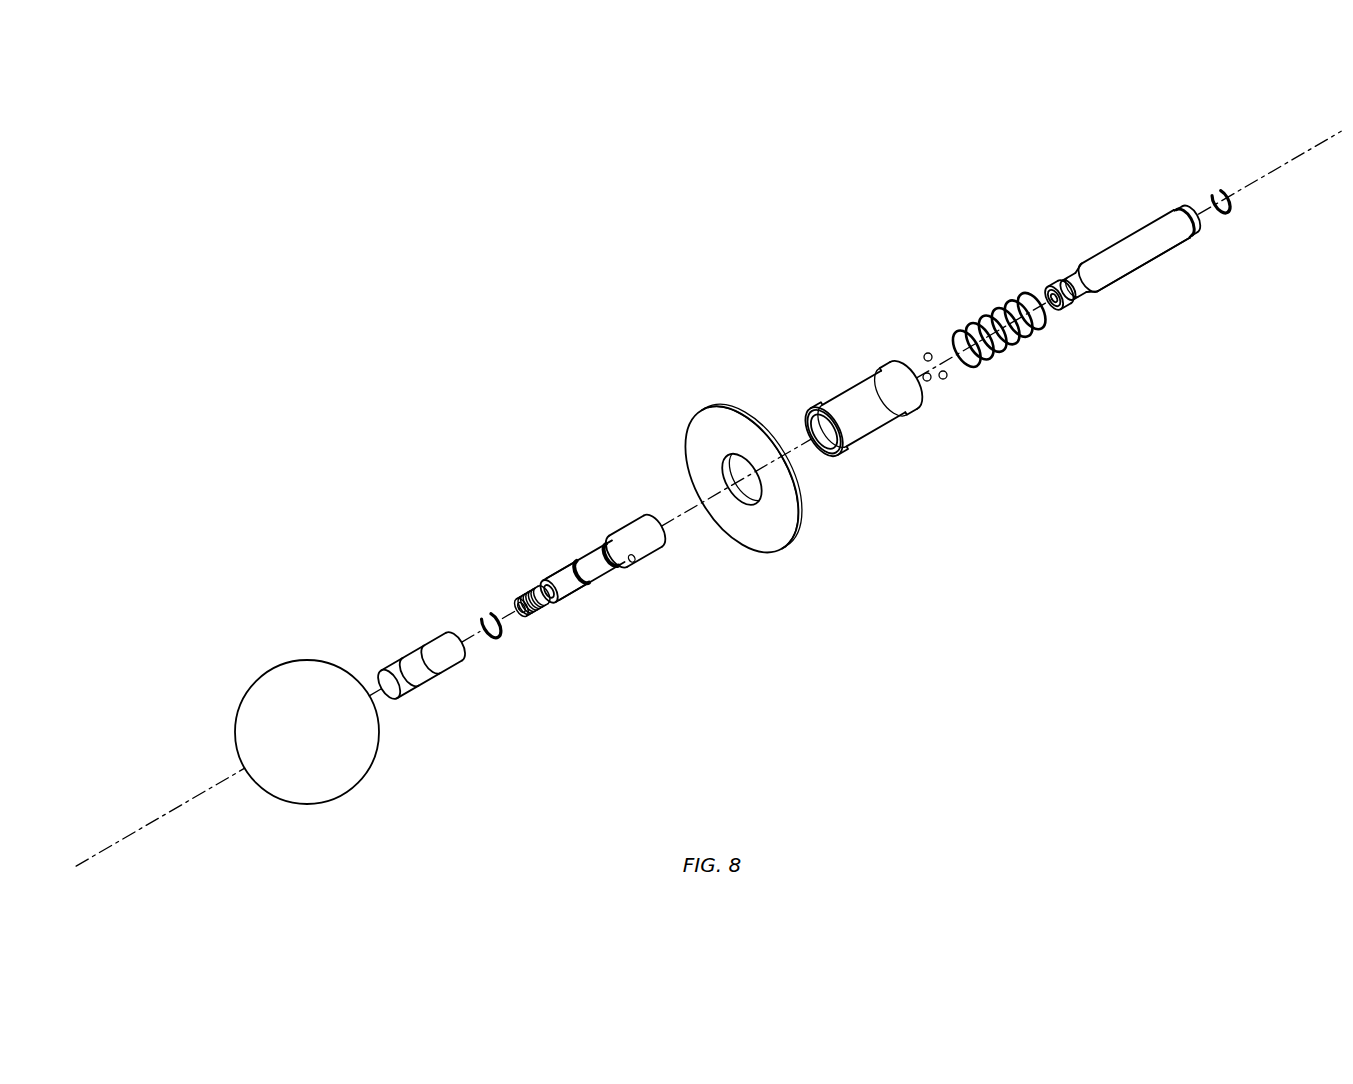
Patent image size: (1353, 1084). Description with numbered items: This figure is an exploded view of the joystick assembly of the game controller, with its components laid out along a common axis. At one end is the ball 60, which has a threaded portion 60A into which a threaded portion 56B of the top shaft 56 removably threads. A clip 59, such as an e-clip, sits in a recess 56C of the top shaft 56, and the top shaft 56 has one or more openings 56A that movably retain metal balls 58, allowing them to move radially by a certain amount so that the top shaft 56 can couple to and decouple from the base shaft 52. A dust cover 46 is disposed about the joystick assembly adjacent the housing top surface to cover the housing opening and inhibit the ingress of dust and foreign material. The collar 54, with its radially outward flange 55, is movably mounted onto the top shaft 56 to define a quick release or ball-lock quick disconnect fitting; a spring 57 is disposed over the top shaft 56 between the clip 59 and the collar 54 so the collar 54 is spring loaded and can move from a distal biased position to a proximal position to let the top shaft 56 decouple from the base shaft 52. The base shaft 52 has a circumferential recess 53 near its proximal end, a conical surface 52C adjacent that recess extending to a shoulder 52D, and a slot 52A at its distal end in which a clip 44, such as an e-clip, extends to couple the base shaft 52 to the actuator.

The clip 44 is at (1217, 182).
The dust cover 46 is at (718, 421).
The base shaft 52 is at (1141, 258).
The slot 52A is at (1189, 219).
The conical surface 52C is at (1076, 285).
The shoulder 52D is at (1112, 292).
The circumferential recess 53 is at (1057, 275).
The collar 54 is at (864, 369).
The flange 55 is at (898, 389).
The top shaft 56 is at (604, 532).
The openings 56A is at (611, 525).
The threaded portion 56B is at (520, 586).
The recess 56C is at (592, 598).
The spring 57 is at (1016, 357).
The metal balls 58 is at (936, 395).
The clip 59 is at (481, 596).
The ball 60 is at (295, 744).
The threaded portion 60A is at (443, 688).